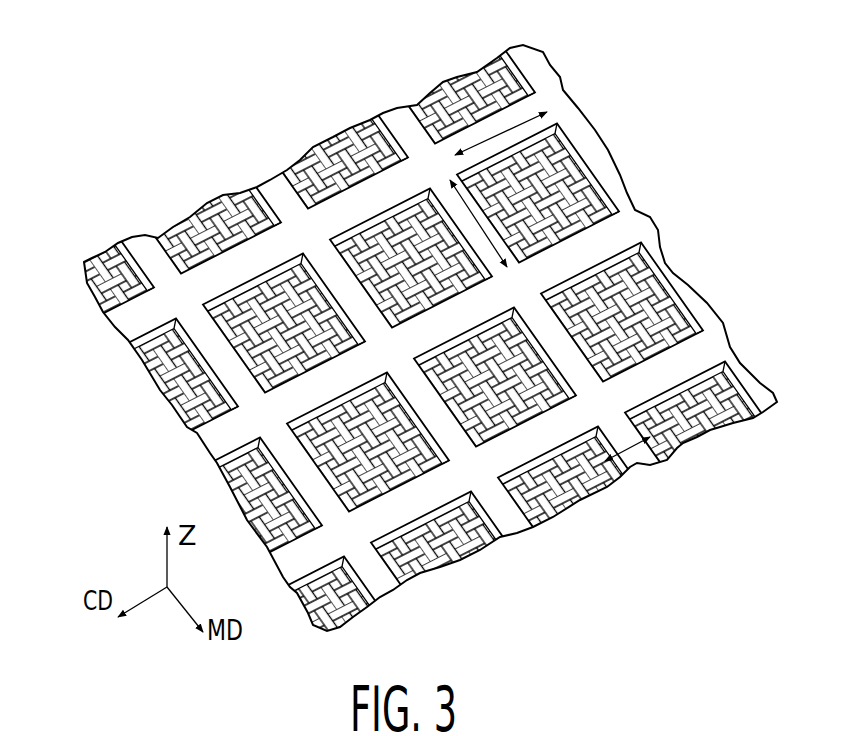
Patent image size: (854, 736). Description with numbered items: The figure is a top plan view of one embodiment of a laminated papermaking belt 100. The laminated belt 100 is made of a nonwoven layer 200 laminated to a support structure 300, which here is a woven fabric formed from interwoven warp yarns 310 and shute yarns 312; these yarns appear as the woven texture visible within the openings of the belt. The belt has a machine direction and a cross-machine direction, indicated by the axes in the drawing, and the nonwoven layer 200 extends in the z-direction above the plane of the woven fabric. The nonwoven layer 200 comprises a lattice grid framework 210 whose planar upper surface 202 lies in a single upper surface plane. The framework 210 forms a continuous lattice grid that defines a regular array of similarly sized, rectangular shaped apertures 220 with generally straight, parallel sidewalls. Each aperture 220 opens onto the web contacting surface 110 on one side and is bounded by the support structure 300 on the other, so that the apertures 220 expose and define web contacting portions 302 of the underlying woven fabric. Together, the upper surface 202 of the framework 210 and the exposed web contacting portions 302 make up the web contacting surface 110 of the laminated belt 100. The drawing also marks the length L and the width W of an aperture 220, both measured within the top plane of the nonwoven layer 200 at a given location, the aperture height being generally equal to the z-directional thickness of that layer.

The laminated belt 100 is at (411, 350).
The web contacting surface 110 is at (97, 228).
The nonwoven layer 200 is at (607, 393).
The upper surface 202 is at (218, 433).
The lattice grid framework 210 is at (398, 188).
The apertures 220 is at (621, 234).
The support structure 300 is at (340, 157).
The web contacting portions 302 is at (561, 183).
The warp yarns 310 is at (547, 520).
The shute yarns 312 is at (577, 503).
The length L is at (545, 112).
The width W is at (512, 270).